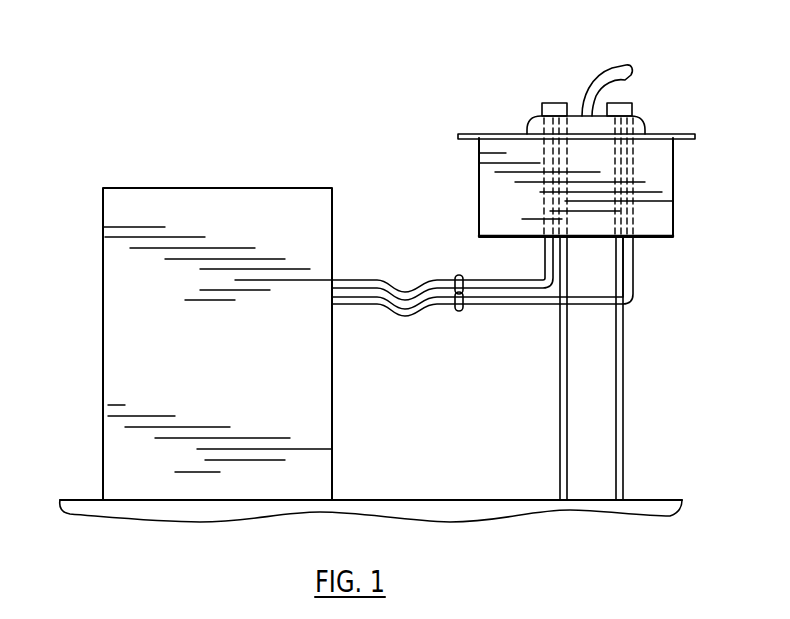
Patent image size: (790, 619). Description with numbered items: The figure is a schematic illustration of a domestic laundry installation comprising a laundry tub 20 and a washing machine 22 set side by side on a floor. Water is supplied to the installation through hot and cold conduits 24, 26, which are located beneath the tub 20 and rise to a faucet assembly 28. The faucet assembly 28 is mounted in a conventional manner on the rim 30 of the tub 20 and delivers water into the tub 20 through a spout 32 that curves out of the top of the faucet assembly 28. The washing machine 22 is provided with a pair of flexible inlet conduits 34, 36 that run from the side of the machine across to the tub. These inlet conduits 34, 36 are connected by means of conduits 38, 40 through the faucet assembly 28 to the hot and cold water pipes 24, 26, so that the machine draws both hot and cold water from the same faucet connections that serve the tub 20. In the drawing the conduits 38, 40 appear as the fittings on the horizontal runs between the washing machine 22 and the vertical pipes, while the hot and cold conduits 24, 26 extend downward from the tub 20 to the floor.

The laundry tub 20 is at (468, 172).
The washing machine 22 is at (152, 184).
The hot water conduit 24 is at (559, 425).
The cold water conduit 26 is at (624, 430).
The faucet assembly 28 is at (570, 102).
The rim 30 is at (463, 133).
The spout 32 is at (615, 70).
The flexible inlet conduit 34 is at (360, 279).
The flexible inlet conduit 36 is at (351, 306).
The conduit 38 is at (486, 279).
The conduit 40 is at (503, 306).